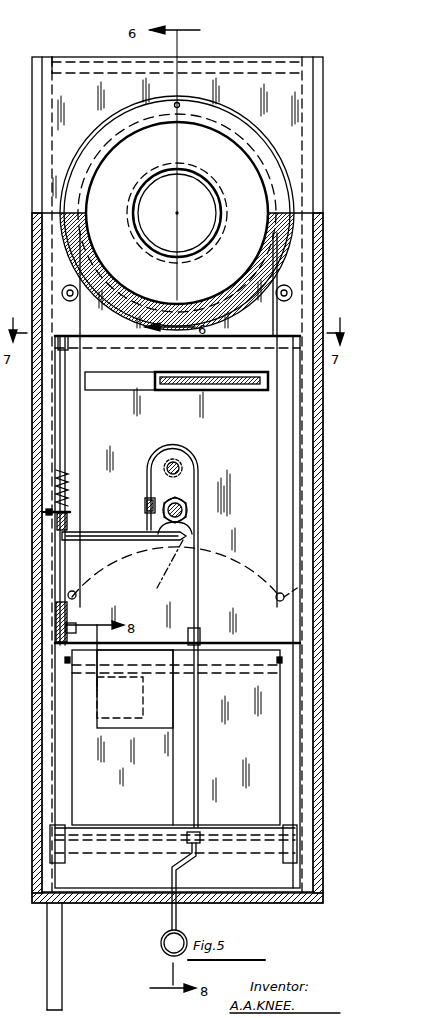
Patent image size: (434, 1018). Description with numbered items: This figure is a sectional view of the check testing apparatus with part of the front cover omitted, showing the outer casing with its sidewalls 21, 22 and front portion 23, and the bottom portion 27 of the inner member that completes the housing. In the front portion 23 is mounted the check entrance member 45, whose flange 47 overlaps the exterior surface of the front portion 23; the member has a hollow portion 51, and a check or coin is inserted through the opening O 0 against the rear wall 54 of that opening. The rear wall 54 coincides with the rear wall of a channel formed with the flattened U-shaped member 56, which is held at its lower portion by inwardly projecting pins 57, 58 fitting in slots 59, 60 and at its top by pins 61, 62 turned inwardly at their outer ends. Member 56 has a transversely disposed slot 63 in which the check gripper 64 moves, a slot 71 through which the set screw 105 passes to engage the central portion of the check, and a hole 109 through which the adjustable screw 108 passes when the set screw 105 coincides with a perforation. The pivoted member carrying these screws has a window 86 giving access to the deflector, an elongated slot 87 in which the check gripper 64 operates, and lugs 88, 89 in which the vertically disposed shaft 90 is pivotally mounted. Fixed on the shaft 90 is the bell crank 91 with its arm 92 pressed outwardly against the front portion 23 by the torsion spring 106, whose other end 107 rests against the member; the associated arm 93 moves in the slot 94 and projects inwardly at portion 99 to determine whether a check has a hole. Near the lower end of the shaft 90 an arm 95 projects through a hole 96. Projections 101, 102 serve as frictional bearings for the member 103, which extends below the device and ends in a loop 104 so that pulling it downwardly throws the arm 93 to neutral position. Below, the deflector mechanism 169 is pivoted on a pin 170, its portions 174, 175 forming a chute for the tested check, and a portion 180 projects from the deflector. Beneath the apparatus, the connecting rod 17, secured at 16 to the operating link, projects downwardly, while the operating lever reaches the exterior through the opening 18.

The opening 0 is at (122, 160).
The securing point of link to connecting rod 16 is at (66, 1000).
The connecting rod 17 is at (50, 945).
The opening 18 is at (250, 423).
The sidewall 21 is at (316, 443).
The sidewall 22 is at (40, 453).
The front portion 23 is at (280, 135).
The bottom portion 27 is at (140, 905).
The check entrance member 45 is at (116, 278).
The flange 47 is at (207, 109).
The hollow portion 51 is at (196, 230).
The rear wall 54 is at (237, 172).
The flattened U-shaped member 56 is at (95, 320).
The pin 57 is at (301, 586).
The pin 58 is at (70, 594).
The slot 59 is at (275, 590).
The slot 60 is at (82, 585).
The pin 61 is at (285, 285).
The pin 62 is at (70, 285).
The transversely disposed slot 63 is at (165, 372).
The check gripper 64 is at (218, 372).
The slot 71 is at (168, 568).
The window 86 is at (228, 648).
The elongated slot 87 is at (120, 384).
The lug 88 is at (75, 345).
The lug 89 is at (135, 645).
The shaft 90 is at (65, 446).
The bell crank 91 is at (70, 520).
The arm 92 is at (45, 511).
The arm 93 is at (150, 532).
The slot 94 is at (133, 541).
The arm 95 is at (56, 630).
The hole 96 is at (80, 625).
The inwardly projecting portion 99 is at (172, 548).
The projection 101 is at (200, 632).
The projection 102 is at (199, 835).
The member 103 is at (197, 455).
The loop 104 is at (162, 946).
The set screw 105 is at (190, 510).
The torsion spring 106 is at (68, 490).
The spring end 107 is at (58, 478).
The adjustable screw 108 is at (175, 462).
The hole 109 is at (145, 506).
The deflector mechanism 169 is at (176, 737).
The pin 170 is at (284, 660).
The portion 174 is at (222, 689).
The portion 175 is at (135, 689).
The projecting portion 180 is at (130, 680).